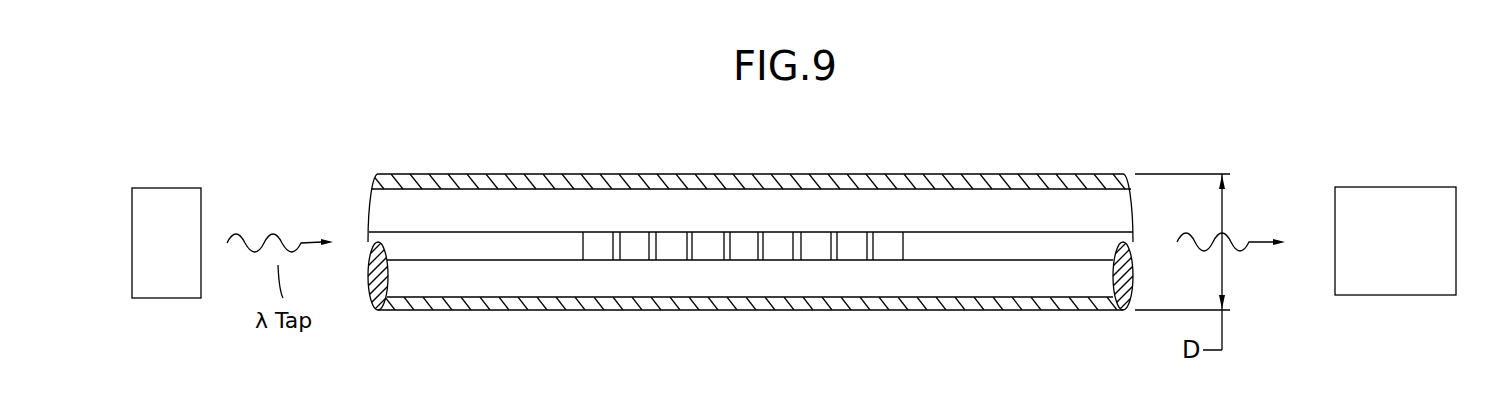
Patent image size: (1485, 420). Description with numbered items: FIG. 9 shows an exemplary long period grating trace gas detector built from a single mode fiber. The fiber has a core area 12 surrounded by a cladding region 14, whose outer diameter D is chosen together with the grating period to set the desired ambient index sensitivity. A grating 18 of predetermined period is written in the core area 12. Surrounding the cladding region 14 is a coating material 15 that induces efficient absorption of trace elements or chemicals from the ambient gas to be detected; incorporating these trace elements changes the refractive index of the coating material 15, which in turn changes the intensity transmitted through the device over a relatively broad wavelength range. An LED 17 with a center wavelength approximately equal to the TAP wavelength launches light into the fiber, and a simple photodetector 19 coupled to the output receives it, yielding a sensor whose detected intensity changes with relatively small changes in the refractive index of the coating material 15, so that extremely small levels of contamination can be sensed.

The core area 12 is at (417, 253).
The cladding region 14 is at (523, 283).
The coating material 15 is at (613, 178).
The LED 17 is at (162, 285).
The grating 18 is at (868, 243).
The photodetector 19 is at (1383, 193).